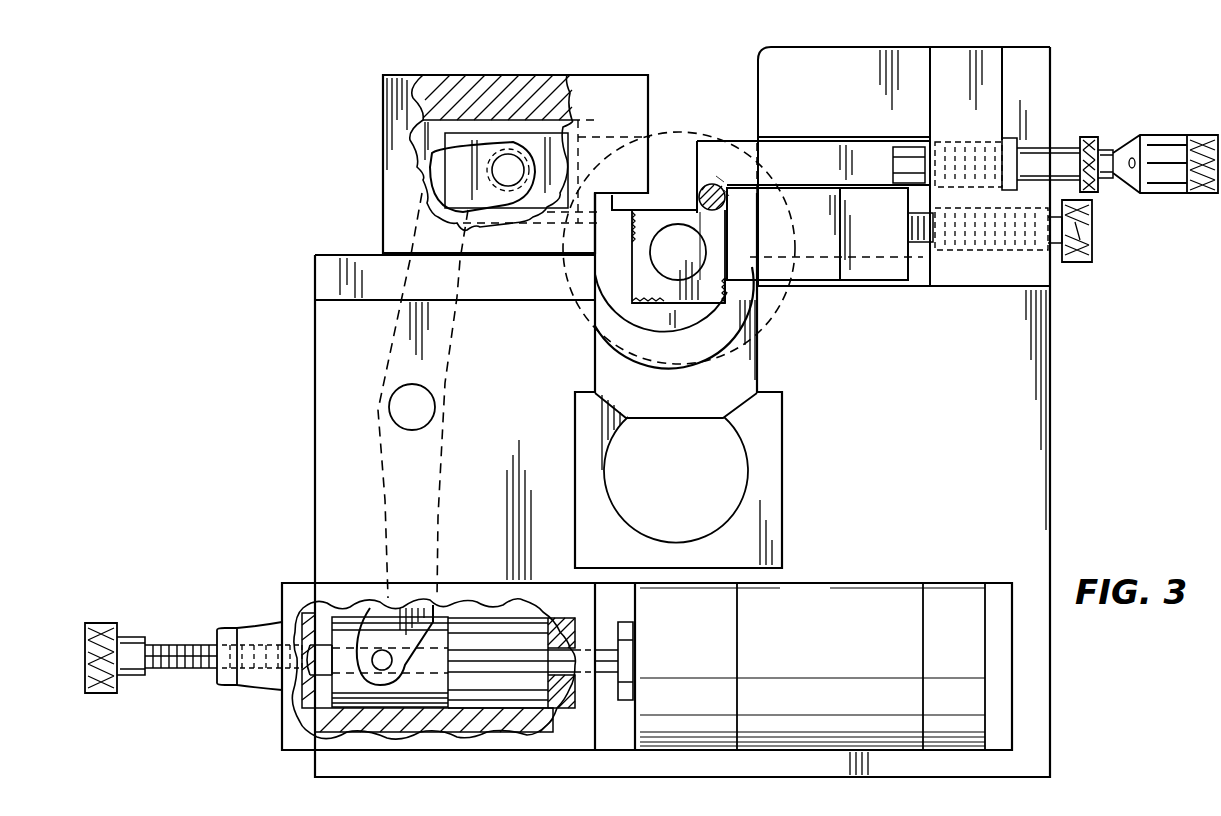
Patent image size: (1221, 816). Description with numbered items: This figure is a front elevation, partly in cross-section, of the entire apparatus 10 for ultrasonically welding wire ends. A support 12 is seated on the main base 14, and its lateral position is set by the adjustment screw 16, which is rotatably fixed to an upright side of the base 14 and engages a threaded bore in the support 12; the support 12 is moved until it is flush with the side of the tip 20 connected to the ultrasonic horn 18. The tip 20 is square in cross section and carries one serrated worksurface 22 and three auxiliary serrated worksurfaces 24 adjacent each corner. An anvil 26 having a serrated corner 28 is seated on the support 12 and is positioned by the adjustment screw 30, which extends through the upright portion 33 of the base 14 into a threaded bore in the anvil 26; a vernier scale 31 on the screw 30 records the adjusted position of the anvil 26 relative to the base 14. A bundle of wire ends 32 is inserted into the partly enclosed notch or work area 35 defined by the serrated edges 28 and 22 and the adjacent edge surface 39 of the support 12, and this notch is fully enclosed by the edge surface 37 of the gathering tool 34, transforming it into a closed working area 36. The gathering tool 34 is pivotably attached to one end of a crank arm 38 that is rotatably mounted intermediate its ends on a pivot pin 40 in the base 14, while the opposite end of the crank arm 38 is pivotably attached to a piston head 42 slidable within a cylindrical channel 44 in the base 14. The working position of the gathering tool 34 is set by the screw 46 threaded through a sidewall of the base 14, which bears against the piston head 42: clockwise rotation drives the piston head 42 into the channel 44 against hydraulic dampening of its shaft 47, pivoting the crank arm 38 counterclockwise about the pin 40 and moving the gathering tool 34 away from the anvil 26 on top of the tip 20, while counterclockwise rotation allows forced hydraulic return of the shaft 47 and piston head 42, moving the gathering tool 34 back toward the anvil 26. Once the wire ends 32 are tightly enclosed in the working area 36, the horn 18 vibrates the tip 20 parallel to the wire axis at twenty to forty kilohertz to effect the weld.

The apparatus 10 is at (1053, 413).
The support 12 is at (840, 287).
The base 14 is at (1000, 488).
The adjustment screw 16 is at (1093, 228).
The ultrasonic horn 18 is at (669, 266).
The tip 20 is at (707, 305).
The serrated worksurface 22 is at (725, 237).
The auxiliary serrated worksurfaces 24 is at (615, 233).
The anvil 26 is at (728, 137).
The serrated corner 28 is at (722, 172).
The adjustment screw 30 is at (1113, 153).
The vernier scale 31 is at (1113, 178).
The wire ends 32 is at (720, 177).
The upright portion 33 is at (993, 80).
The gathering tool 34 is at (660, 137).
The work area 35 is at (727, 193).
The closed working area 36 is at (698, 192).
The edge surface 37 is at (707, 160).
The crank arm 38 is at (397, 311).
The edge surface 39 is at (770, 292).
The pivot pin 40 is at (403, 420).
The piston head 42 is at (350, 675).
The cylindrical channel 44 is at (483, 698).
The screw 46 is at (183, 647).
The piston shaft 47 is at (512, 660).